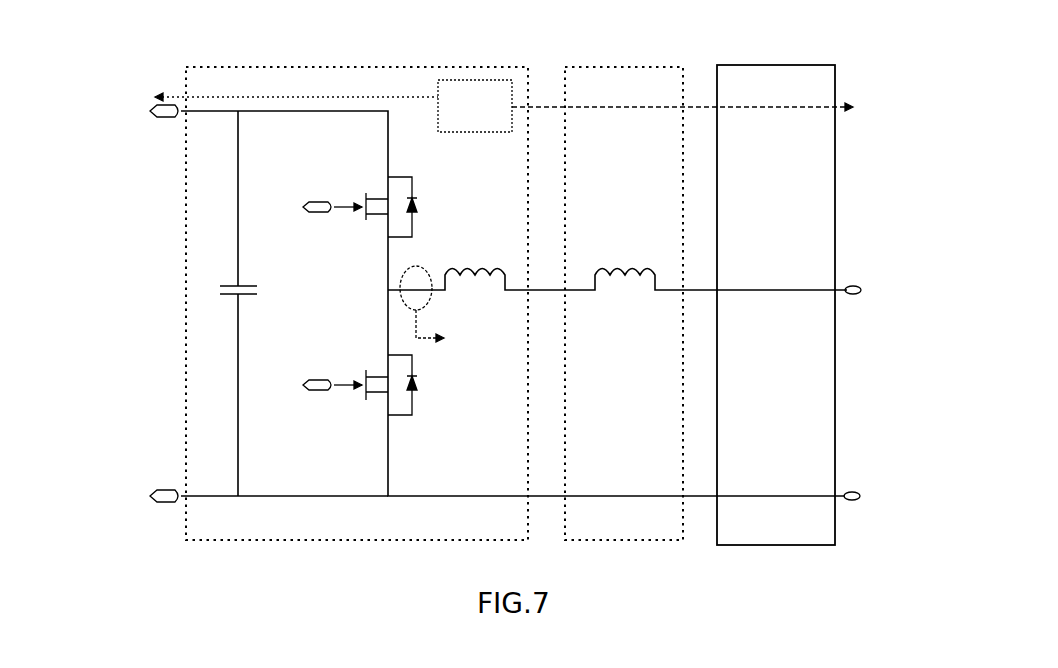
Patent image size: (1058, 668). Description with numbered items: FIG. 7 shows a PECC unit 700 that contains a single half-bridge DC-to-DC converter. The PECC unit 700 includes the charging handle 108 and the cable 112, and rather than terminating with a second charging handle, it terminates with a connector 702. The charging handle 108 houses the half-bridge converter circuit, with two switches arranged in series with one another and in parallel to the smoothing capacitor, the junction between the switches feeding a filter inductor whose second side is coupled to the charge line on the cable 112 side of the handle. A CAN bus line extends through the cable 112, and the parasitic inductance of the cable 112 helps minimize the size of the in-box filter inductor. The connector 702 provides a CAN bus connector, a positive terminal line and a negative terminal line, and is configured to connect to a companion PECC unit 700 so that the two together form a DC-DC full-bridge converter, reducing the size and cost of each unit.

The PECC unit 700 is at (133, 32).
The charging handle 108 is at (310, 66).
The cable 112 is at (583, 66).
The connector 702 is at (750, 64).